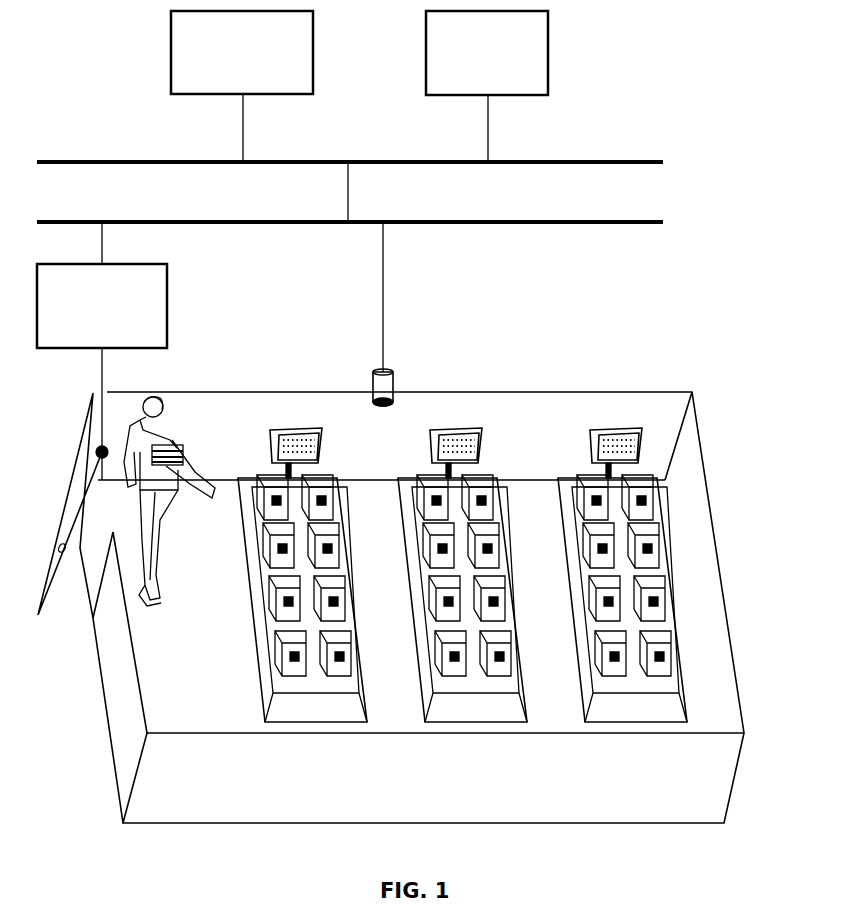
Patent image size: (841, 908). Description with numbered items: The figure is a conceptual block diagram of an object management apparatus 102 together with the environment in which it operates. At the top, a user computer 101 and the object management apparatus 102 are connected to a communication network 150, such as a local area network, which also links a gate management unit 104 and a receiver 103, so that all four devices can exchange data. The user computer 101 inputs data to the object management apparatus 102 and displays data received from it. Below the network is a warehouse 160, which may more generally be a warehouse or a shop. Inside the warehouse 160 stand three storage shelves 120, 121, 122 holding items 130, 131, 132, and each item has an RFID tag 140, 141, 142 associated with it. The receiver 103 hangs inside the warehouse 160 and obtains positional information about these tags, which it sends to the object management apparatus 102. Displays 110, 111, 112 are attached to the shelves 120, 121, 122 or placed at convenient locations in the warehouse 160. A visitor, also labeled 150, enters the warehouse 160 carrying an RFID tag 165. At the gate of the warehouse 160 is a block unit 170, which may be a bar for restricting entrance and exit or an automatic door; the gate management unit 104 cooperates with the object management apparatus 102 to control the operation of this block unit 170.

The user computer 101 is at (315, 54).
The object management apparatus 102 is at (550, 54).
The receiver 103 is at (390, 385).
The gate management unit 104 is at (168, 307).
The display 110 is at (325, 454).
The display 111 is at (485, 454).
The display 112 is at (594, 440).
The storage shelf 120 is at (278, 712).
The storage shelf 121 is at (440, 712).
The storage shelf 122 is at (663, 712).
The item 130 is at (292, 661).
The item 131 is at (452, 662).
The item 132 is at (612, 665).
The RFID tag 140 is at (305, 702).
The RFID tag 141 is at (465, 702).
The RFID tag 142 is at (627, 702).
The communication network 150 is at (553, 162).
The warehouse 160 is at (636, 396).
The RFID tag 165 is at (184, 456).
The block unit 170 is at (70, 505).